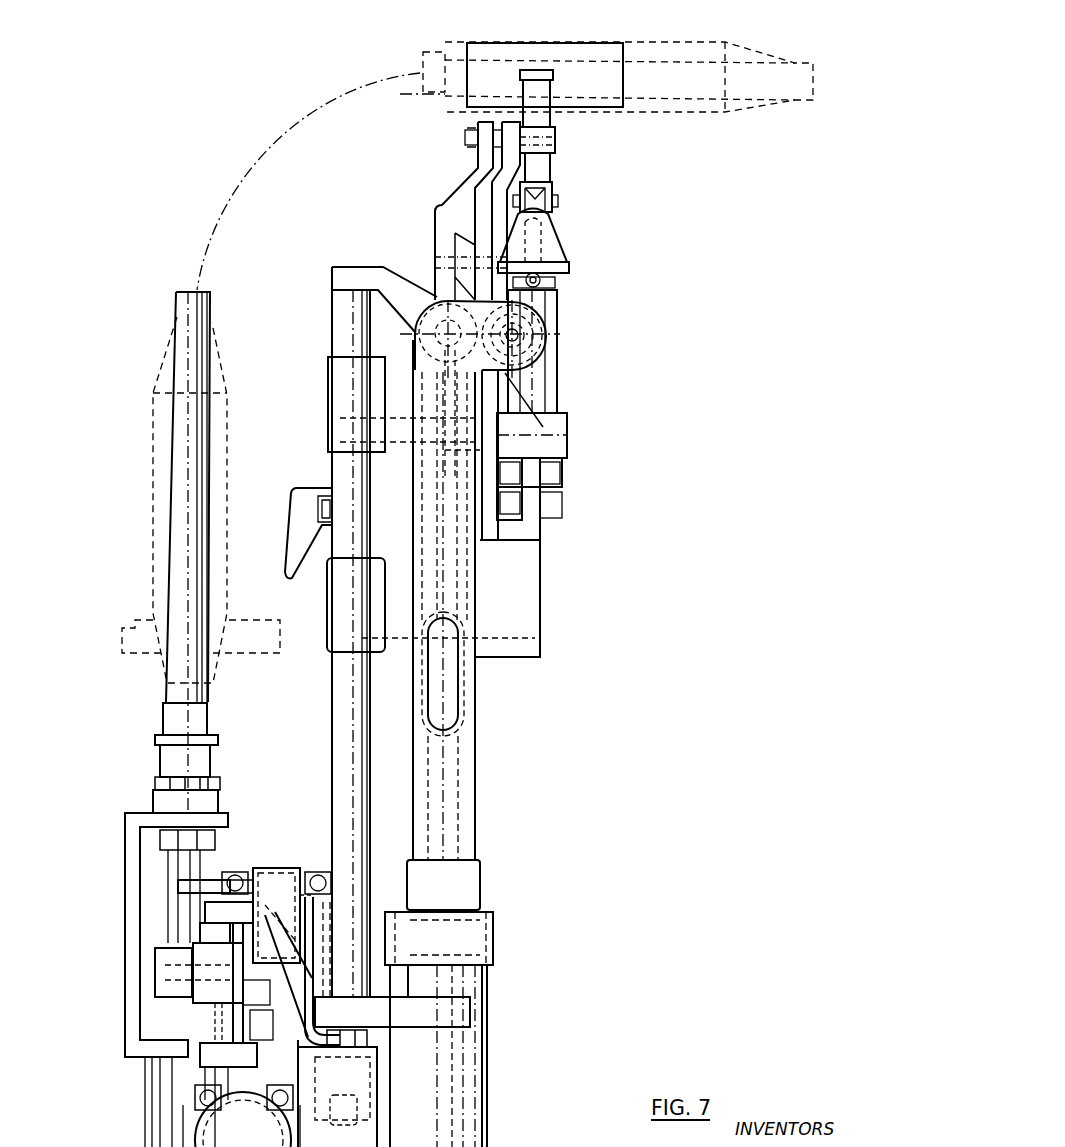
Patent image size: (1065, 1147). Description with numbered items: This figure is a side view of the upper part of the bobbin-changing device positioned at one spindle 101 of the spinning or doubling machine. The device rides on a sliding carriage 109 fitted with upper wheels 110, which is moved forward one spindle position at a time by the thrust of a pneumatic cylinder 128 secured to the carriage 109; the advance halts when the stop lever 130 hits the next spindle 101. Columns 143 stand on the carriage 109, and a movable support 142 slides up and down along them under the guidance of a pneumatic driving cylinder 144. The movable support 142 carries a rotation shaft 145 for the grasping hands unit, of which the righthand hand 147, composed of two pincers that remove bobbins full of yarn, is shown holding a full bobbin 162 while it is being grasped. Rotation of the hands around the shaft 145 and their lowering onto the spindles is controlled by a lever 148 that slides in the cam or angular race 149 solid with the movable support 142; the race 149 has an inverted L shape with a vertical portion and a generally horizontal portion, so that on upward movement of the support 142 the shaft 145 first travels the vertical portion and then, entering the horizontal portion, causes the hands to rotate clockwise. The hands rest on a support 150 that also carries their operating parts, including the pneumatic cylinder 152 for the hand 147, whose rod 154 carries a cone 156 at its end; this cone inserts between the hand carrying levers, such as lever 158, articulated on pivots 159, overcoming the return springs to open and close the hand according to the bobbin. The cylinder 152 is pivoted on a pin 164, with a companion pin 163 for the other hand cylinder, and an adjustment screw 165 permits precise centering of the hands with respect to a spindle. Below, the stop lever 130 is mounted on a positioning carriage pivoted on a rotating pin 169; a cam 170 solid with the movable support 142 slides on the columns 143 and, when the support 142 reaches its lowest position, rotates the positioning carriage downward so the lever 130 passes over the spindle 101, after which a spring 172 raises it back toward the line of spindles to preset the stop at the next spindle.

The spindle 101 is at (200, 724).
The sliding carriage 109 is at (365, 1057).
The upper wheels 110 is at (212, 933).
The pneumatic cylinder 128 is at (292, 1102).
The stop lever 130 is at (210, 885).
The movable support 142 is at (530, 640).
The columns 143 is at (343, 788).
The pneumatic driving cylinder 144 is at (466, 1070).
The rotation shaft 145 is at (555, 343).
The righthand hand 147 is at (482, 98).
The lever 148 is at (540, 367).
The cam or angular race 149 is at (460, 585).
The support 150 is at (458, 227).
The pneumatic cylinder 152 is at (545, 397).
The rod 154 is at (537, 250).
The cone 156 is at (545, 233).
The hand carrying lever 158 is at (540, 178).
The pivots 159 is at (548, 150).
The full bobbin 162 is at (690, 105).
The pin 163 is at (548, 470).
The pin 164 is at (550, 520).
The adjustment screw 165 is at (542, 283).
The rotating pin 169 is at (298, 870).
The cam 170 is at (296, 540).
The spring 172 is at (320, 928).